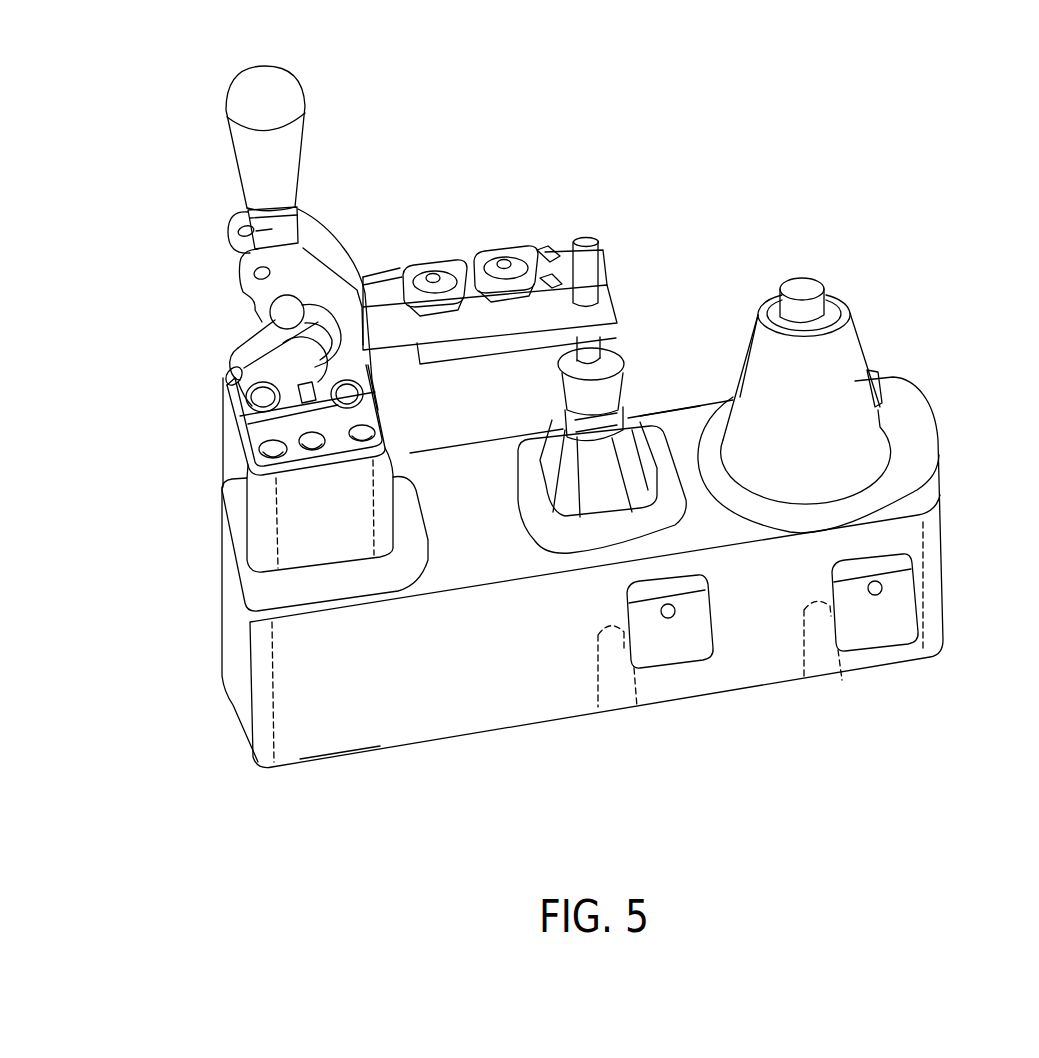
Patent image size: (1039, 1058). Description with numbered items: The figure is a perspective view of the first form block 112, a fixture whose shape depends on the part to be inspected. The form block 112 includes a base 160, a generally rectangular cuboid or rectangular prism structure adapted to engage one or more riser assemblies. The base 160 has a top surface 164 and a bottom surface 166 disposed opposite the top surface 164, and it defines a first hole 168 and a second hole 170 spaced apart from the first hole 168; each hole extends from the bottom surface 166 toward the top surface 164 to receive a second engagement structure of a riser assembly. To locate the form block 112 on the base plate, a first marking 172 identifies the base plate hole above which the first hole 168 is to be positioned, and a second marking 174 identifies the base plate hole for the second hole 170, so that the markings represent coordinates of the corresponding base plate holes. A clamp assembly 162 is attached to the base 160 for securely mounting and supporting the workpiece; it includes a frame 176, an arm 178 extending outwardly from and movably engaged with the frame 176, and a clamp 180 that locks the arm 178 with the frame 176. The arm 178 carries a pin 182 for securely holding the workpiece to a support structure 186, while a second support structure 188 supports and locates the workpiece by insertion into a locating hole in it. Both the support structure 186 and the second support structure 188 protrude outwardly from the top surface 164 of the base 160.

The first form block 112 is at (861, 236).
The base 160 is at (918, 550).
The clamp assembly 162 is at (242, 378).
The top surface 164 is at (690, 424).
The bottom surface 166 is at (353, 758).
The first hole 168 is at (597, 690).
The second hole 170 is at (800, 674).
The first marking 172 is at (678, 664).
The second marking 174 is at (884, 646).
The frame 176 is at (246, 432).
The arm 178 is at (573, 246).
The clamp 180 is at (238, 233).
The pin 182 is at (615, 383).
The support structure 186 is at (637, 477).
The second support structure 188 is at (848, 362).